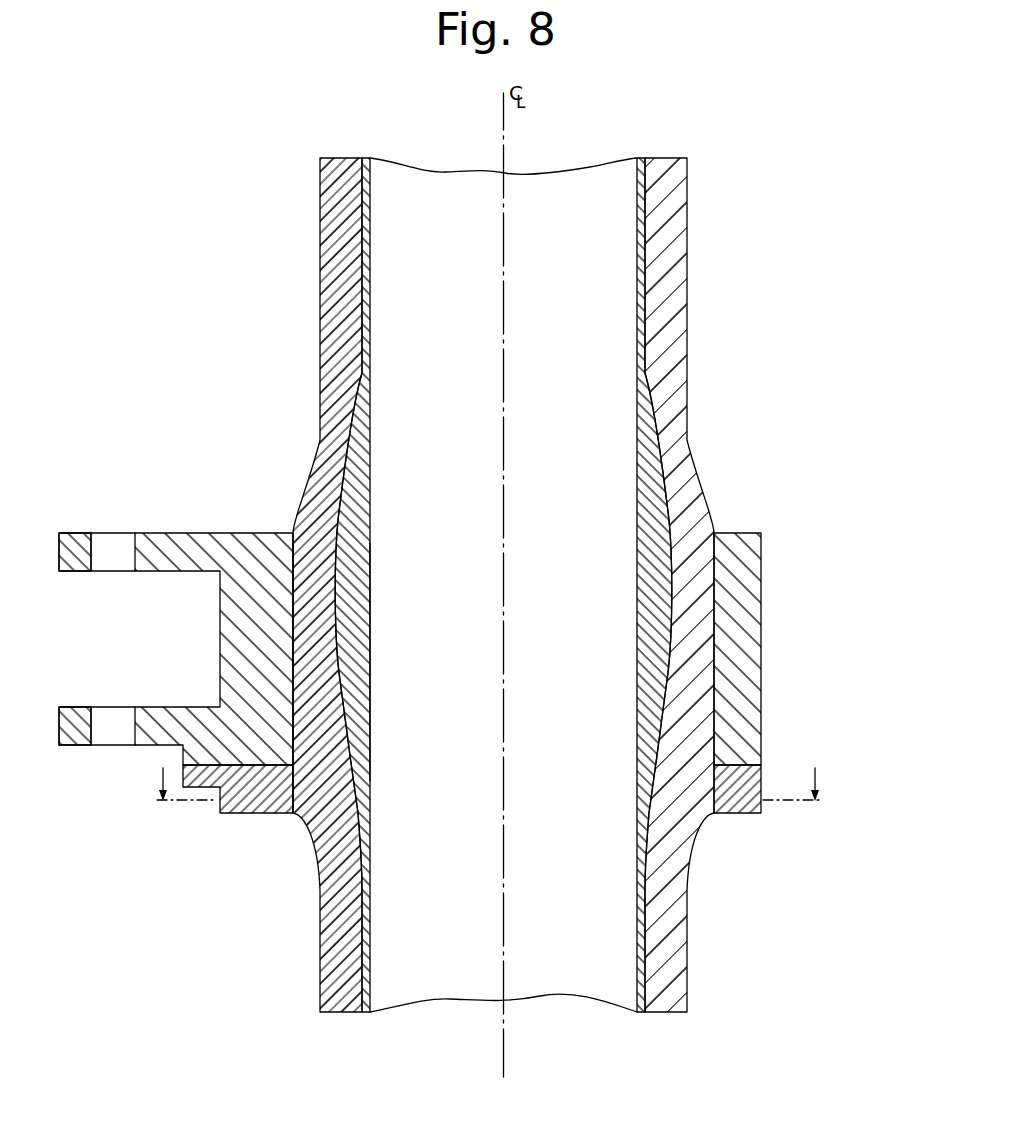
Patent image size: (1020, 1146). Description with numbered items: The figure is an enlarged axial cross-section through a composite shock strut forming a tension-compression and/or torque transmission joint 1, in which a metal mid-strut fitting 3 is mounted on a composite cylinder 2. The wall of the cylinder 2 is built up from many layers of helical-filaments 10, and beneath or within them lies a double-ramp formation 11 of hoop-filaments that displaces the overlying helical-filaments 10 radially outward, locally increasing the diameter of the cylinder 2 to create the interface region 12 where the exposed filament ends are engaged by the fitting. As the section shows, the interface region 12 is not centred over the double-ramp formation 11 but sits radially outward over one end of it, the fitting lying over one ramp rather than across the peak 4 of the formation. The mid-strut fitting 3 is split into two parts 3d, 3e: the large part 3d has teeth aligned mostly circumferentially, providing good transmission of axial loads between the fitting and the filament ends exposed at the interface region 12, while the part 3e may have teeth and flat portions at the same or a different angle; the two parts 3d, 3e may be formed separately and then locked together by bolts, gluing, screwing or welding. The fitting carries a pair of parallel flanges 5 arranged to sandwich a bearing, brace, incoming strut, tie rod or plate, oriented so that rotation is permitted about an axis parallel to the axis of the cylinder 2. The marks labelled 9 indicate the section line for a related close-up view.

The tension-compression and/or torque transmission joint 1 is at (222, 935).
The composite cylinder 2 is at (700, 243).
The mid-strut fitting 3 is at (850, 532).
The part of the mid-strut fitting 3d is at (740, 553).
The part of the mid-strut fitting 3e is at (745, 792).
The peak of the double-ramp formation 4 is at (352, 572).
The flange 5 is at (172, 550).
The section line 9- 9 is at (487, 784).
The layers of helical-filaments 10 is at (668, 377).
The double-ramp formation 11 is at (347, 470).
The interface region 12 is at (373, 543).